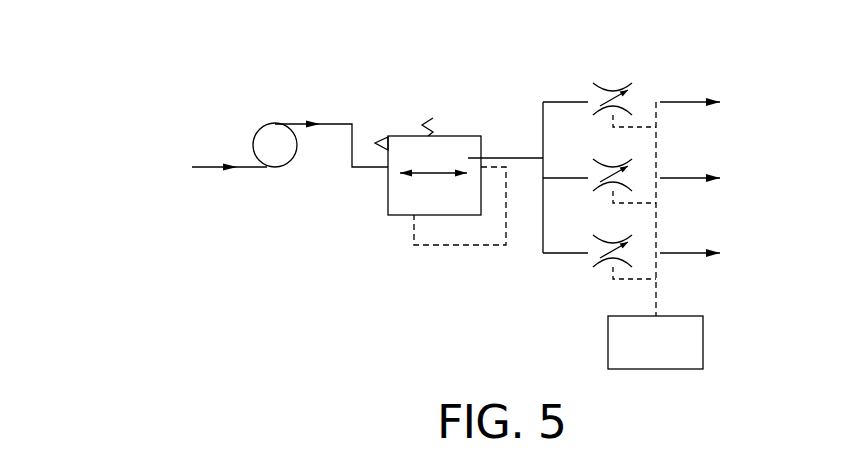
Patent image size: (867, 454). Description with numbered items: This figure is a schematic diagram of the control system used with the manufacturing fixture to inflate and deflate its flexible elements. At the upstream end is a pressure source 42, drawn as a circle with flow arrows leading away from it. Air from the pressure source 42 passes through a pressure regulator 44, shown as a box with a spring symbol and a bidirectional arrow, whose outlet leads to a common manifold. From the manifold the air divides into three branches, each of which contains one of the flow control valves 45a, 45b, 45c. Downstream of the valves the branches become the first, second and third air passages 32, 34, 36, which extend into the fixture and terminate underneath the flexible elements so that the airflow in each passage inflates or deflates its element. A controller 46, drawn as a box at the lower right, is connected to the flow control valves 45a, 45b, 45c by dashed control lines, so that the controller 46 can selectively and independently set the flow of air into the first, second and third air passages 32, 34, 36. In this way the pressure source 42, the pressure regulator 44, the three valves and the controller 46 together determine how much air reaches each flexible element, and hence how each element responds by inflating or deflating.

The pressure source 42 is at (267, 140).
The pressure regulator 44 is at (391, 204).
The flow control valve 45a is at (613, 92).
The flow control valve 45b is at (610, 165).
The flow control valve 45c is at (610, 264).
The first air passage 32 is at (680, 100).
The second air passage 34 is at (680, 178).
The third air passage 36 is at (680, 253).
The controller 46 is at (668, 356).